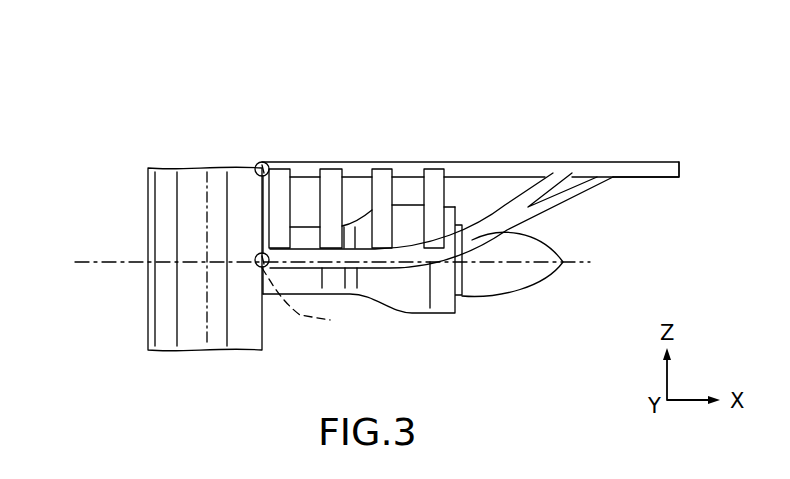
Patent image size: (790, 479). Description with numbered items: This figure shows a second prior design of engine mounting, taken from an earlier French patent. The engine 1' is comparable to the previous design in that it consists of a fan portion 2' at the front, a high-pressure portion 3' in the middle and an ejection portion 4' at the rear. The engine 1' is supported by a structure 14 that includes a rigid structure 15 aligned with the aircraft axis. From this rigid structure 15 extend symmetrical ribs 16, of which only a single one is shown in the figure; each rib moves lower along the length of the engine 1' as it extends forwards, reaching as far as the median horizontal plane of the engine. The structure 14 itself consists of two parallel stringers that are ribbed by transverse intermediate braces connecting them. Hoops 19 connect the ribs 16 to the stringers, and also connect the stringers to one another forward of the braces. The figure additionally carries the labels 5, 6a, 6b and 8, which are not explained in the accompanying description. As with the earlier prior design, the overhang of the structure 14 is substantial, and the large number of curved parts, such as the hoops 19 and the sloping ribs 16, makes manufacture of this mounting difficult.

The engine 1' is at (88, 54).
The fan portion 2' is at (205, 227).
The high-pressure portion 3' is at (362, 302).
The ejection portion 4' is at (531, 341).
The exhaust nozzle cone 5 is at (573, 260).
The first duct / link 6a is at (264, 268).
The second duct / link (hidden) 6b is at (313, 301).
The pivot joints 8 is at (262, 162).
The structure 14 is at (552, 122).
The rigid structure 15 is at (654, 150).
The symmetrical ribs 16 is at (413, 250).
The hoops 19 is at (329, 193).